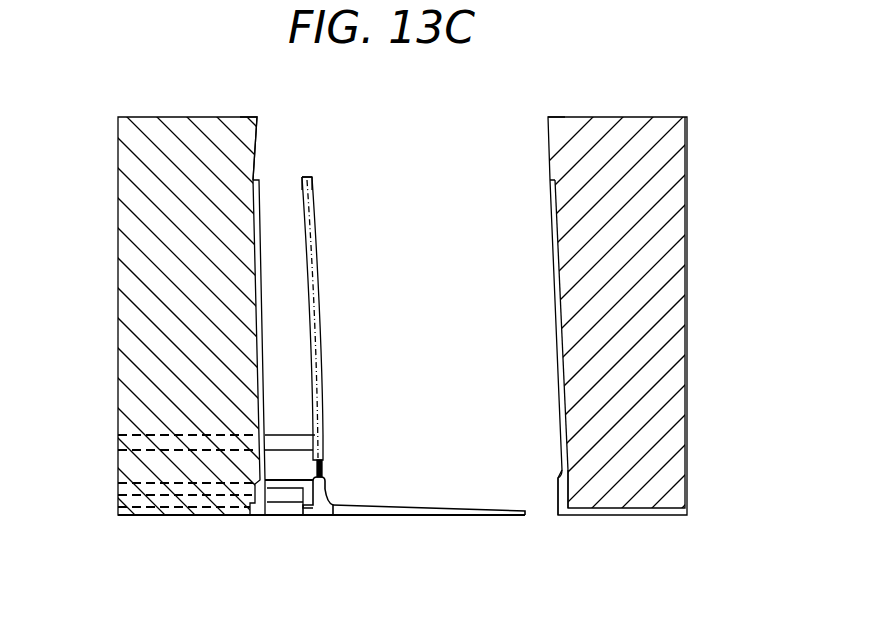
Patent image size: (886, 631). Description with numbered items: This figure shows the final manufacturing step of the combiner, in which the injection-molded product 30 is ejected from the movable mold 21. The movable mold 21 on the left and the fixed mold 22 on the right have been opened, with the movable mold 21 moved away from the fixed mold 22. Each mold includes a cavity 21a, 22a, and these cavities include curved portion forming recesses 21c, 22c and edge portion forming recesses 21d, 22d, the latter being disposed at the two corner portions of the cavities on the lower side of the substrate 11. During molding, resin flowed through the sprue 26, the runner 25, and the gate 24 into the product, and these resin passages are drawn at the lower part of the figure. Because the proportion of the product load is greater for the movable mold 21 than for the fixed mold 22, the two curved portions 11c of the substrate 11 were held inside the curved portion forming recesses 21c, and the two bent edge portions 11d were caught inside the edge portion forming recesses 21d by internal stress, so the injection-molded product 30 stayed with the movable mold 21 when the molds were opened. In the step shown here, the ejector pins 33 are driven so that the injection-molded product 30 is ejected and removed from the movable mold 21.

The substrate 11 is at (326, 262).
The curved portion 11c is at (312, 178).
The bent edge portion 11d is at (323, 455).
The movable mold 21 is at (110, 252).
The cavity 21a is at (262, 308).
The curved portion forming recess 21c is at (253, 178).
The edge portion forming recess 21d is at (260, 465).
The fixed mold 22 is at (696, 251).
The cavity 22a is at (562, 322).
The curved portion forming recess 22c is at (555, 180).
The edge portion forming recess 22d is at (562, 465).
The gate 24 is at (323, 468).
The runner 25 is at (328, 510).
The sprue 26 is at (373, 508).
The injection-molded product 30 is at (341, 319).
The ejector pin 33 is at (292, 488).